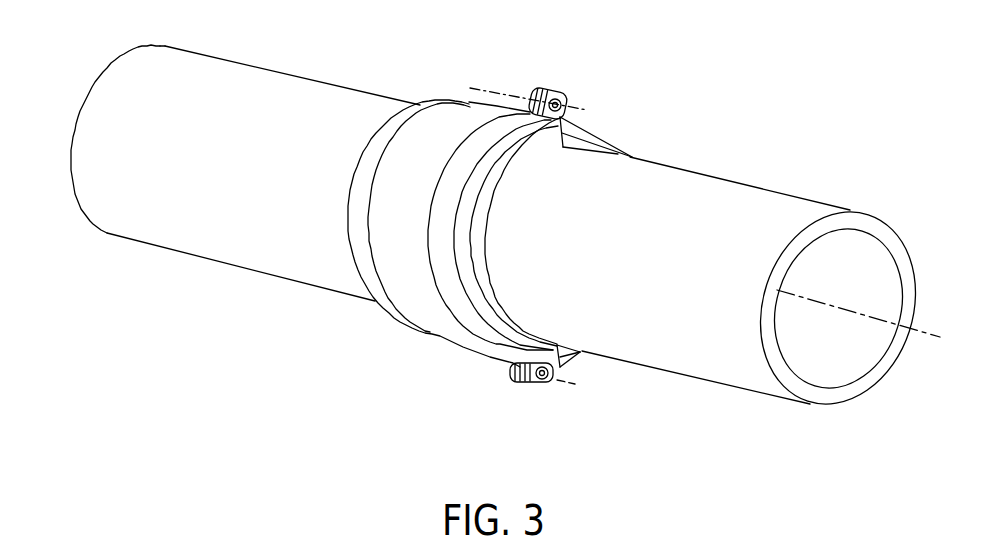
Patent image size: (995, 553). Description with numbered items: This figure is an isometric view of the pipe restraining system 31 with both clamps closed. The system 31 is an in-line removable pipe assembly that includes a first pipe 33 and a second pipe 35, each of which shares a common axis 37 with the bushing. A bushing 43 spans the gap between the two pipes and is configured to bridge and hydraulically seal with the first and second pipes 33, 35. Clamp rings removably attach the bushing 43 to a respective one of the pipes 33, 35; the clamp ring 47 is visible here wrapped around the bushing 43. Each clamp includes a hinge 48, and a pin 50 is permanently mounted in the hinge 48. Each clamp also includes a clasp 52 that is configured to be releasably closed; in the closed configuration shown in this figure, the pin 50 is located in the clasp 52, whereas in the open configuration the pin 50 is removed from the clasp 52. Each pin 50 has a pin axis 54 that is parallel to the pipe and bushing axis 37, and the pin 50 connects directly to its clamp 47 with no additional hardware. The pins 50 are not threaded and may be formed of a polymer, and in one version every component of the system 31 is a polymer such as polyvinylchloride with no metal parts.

The pipe restraining system 31 is at (338, 353).
The first pipe 33 is at (261, 80).
The second pipe 35 is at (770, 202).
The axis 37 is at (922, 320).
The bushing 43 is at (494, 114).
The second clamp ring 47 is at (613, 130).
The hinge 48 is at (510, 378).
The pin 50 is at (561, 99).
The clasp 52 is at (547, 92).
The pin axis 54 is at (507, 87).